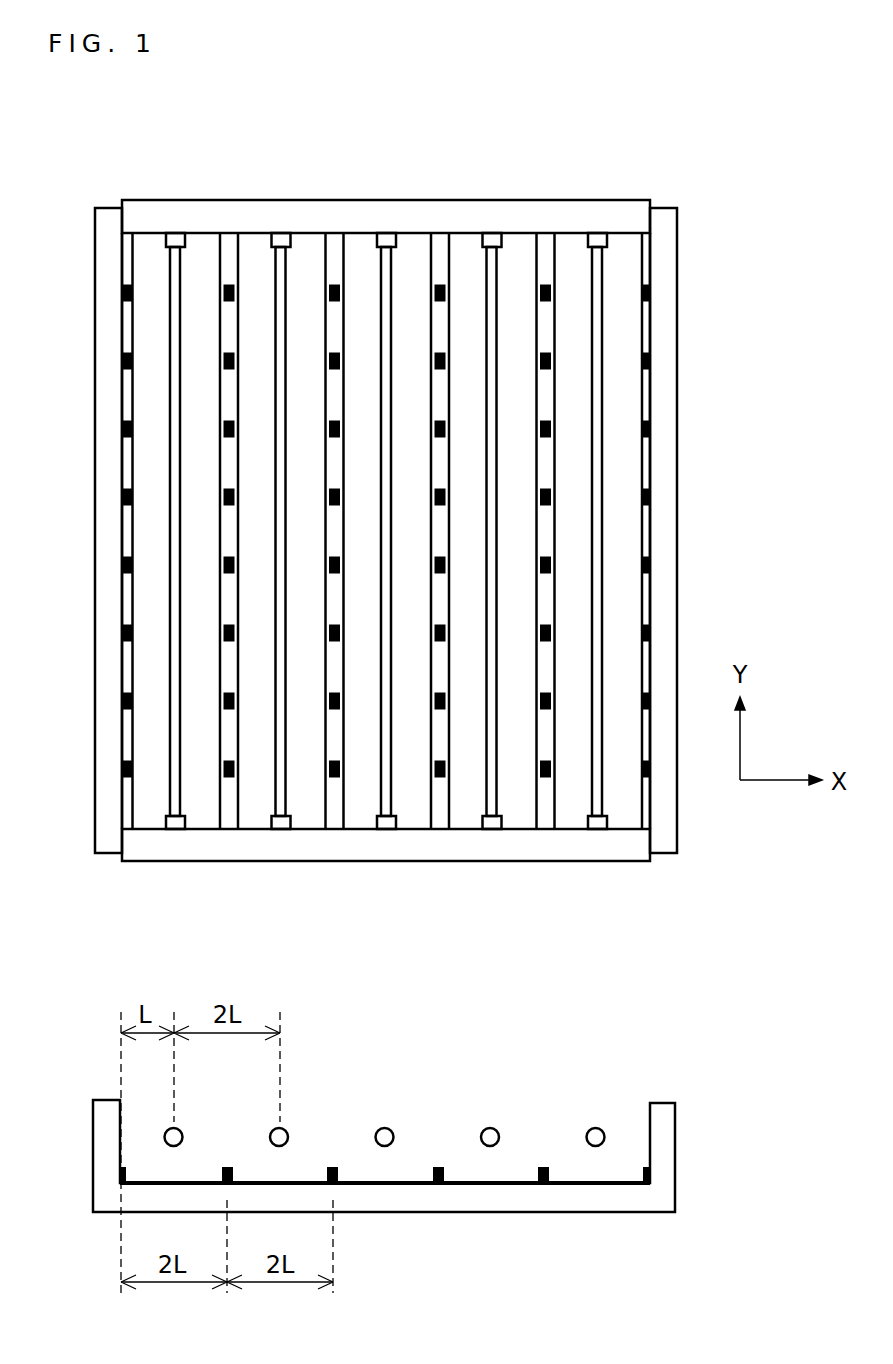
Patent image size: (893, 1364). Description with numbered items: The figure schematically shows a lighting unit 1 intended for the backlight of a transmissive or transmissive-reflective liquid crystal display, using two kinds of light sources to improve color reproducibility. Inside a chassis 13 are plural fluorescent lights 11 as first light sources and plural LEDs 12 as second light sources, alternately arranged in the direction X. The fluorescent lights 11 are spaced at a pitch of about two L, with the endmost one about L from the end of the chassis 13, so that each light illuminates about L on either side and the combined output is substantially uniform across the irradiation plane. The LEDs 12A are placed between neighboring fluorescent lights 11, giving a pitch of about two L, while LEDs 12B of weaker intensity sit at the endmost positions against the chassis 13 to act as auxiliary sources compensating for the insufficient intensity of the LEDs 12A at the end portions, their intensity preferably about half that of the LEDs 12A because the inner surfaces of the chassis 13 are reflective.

The lighting unit 1 is at (684, 142).
The fluorescent lights 11 is at (388, 293).
The LEDs 12 is at (123, 144).
The LEDs 12A is at (232, 292).
The LEDs 12B is at (129, 293).
The chassis 13 is at (677, 407).